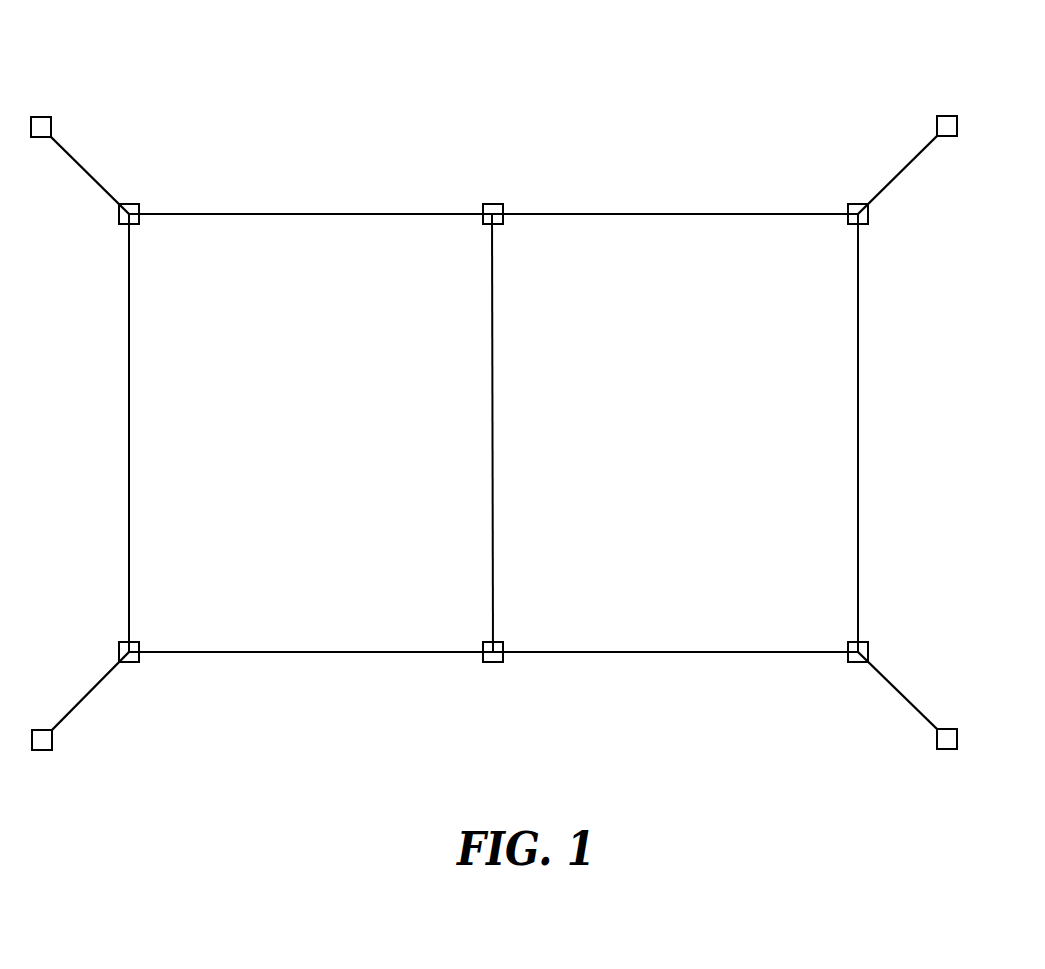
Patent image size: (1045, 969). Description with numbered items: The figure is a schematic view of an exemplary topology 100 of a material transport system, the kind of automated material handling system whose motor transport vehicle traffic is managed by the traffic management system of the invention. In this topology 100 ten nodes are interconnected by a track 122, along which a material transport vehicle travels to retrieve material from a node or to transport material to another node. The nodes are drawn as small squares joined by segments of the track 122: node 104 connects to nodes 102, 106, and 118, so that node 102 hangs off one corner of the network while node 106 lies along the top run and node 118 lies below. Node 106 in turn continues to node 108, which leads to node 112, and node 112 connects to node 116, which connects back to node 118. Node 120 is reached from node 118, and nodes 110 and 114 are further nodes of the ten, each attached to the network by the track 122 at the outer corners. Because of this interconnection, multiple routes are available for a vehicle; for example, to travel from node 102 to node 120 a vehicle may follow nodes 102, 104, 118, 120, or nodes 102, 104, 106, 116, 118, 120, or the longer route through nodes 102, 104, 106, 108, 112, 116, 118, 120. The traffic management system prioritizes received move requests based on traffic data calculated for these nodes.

The topology 100 is at (725, 58).
The node 102 is at (41, 115).
The node 104 is at (127, 202).
The node 106 is at (492, 203).
The node 108 is at (860, 202).
The node 110 is at (945, 115).
The node 112 is at (860, 663).
The node 114 is at (947, 750).
The node 116 is at (493, 662).
The node 118 is at (127, 663).
The node 120 is at (42, 750).
The track 122 is at (313, 212).